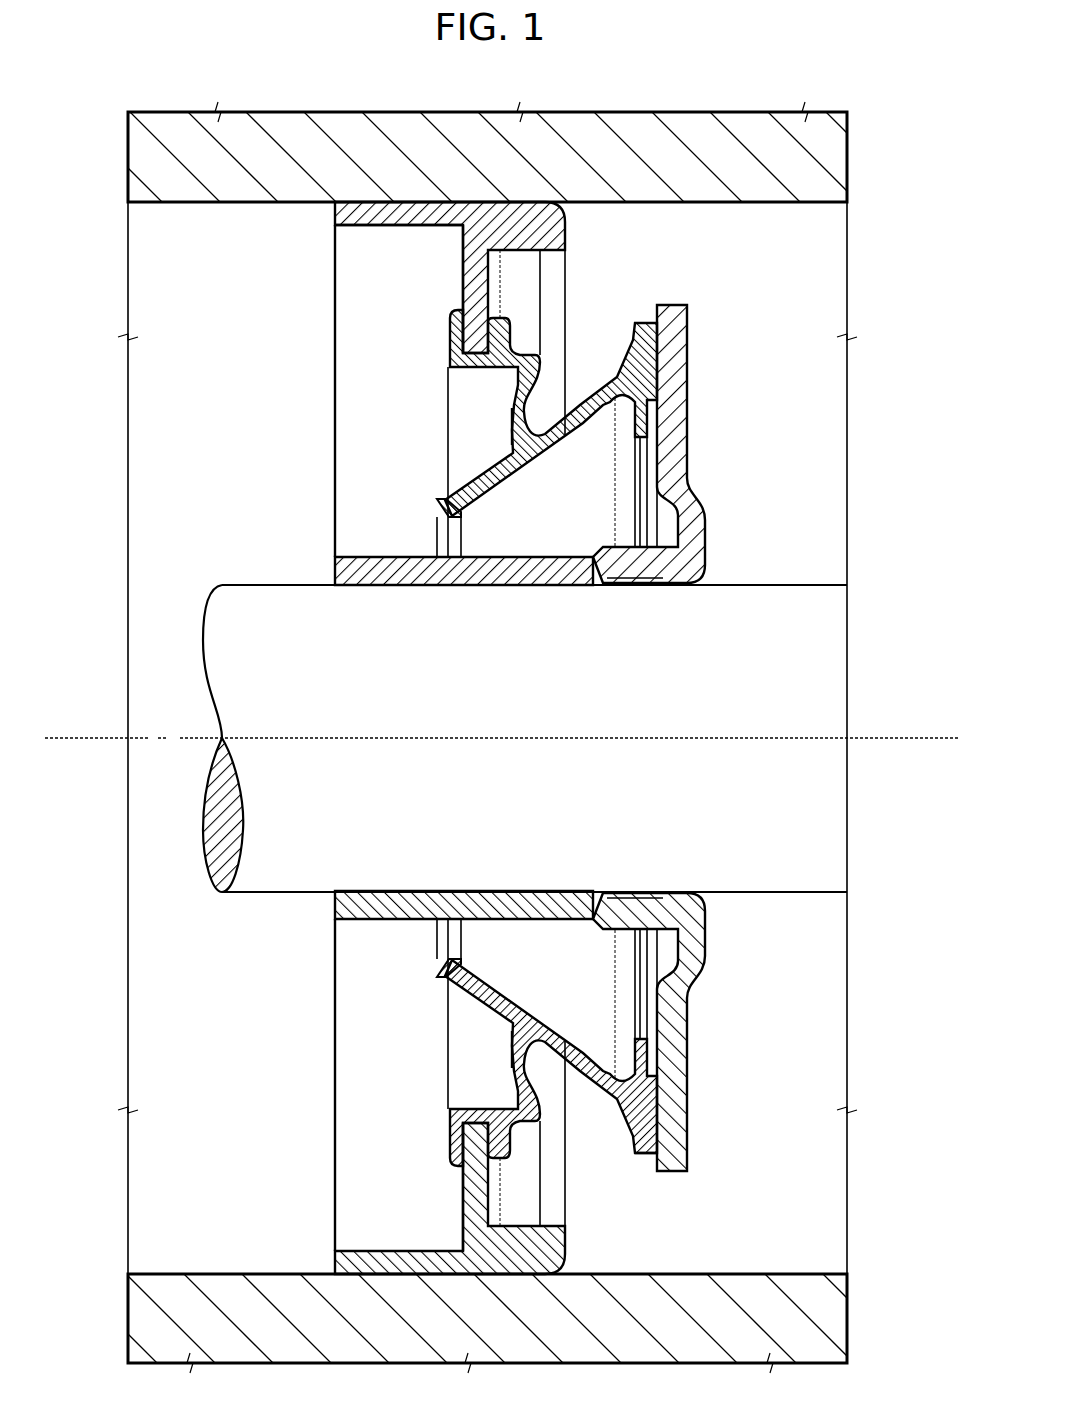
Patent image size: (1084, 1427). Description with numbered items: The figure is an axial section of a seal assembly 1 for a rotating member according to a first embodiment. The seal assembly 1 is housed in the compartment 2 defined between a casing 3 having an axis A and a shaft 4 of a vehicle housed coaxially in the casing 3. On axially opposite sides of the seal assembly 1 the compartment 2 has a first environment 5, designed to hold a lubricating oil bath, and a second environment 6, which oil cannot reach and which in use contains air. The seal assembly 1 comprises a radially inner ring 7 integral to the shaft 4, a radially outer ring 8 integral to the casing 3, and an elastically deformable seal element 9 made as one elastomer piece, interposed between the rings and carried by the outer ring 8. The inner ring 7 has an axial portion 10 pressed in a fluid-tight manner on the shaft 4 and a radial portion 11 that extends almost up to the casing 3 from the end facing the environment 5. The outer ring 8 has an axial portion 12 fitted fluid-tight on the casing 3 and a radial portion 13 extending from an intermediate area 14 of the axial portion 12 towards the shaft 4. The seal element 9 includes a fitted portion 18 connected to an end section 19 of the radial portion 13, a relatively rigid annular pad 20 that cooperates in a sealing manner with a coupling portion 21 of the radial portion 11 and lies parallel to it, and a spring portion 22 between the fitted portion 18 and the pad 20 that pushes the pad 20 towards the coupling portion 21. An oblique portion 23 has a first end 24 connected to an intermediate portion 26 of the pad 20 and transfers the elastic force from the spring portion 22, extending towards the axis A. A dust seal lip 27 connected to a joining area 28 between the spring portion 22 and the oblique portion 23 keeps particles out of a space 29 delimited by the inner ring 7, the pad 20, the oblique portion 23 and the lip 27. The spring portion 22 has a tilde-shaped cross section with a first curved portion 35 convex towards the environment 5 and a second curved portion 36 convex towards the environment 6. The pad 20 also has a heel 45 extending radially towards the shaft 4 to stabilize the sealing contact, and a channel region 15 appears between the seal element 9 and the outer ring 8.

The seal assembly 1 is at (270, 305).
The compartment 2 is at (180, 1000).
The casing 3 is at (150, 110).
The shaft 4 is at (248, 585).
The first environment 5 is at (810, 258).
The second environment 6 is at (160, 1225).
The radially inner ring 7 is at (712, 516).
The radially outer ring 8 is at (400, 230).
The seal element 9 is at (612, 313).
The axial portion 10 is at (450, 585).
The radial portion 11 is at (682, 380).
The axial portion 12 is at (405, 205).
The radial portion 13 is at (462, 285).
The intermediate area 14 is at (468, 215).
The channel 15 is at (585, 1030).
The fitted portion 18 is at (445, 1140).
The end section 19 is at (450, 1122).
The annular pad 20 is at (640, 1155).
The coupling portion 21 is at (662, 368).
The spring portion 22 is at (511, 400).
The oblique portion 23 is at (600, 1050).
The first end 24 is at (613, 1135).
The intermediate portion 26 is at (680, 1085).
The dust seal lip 27 is at (438, 972).
The joining area 28 is at (535, 1015).
The space 29 is at (555, 527).
The first curved portion 35 is at (543, 362).
The second curved portion 36 is at (515, 426).
The heel 45 is at (650, 1160).
The axis A is at (93, 738).